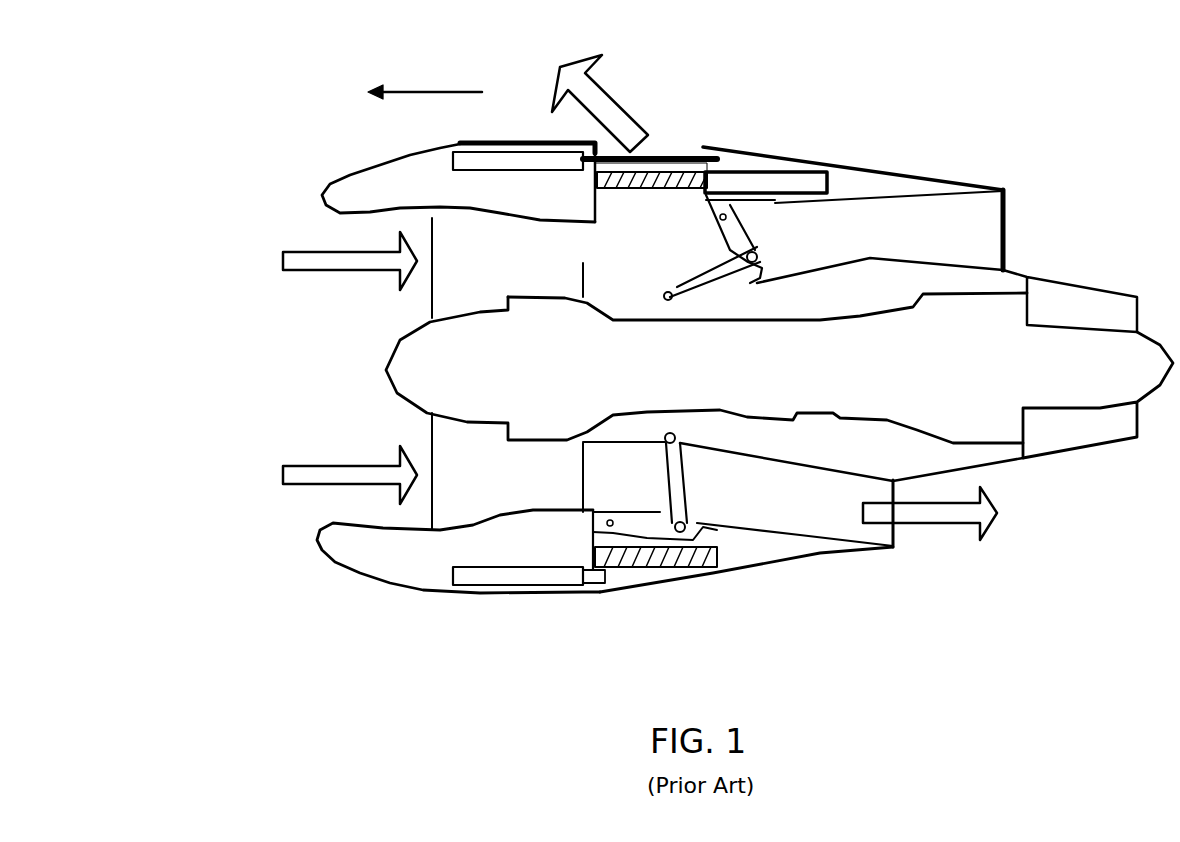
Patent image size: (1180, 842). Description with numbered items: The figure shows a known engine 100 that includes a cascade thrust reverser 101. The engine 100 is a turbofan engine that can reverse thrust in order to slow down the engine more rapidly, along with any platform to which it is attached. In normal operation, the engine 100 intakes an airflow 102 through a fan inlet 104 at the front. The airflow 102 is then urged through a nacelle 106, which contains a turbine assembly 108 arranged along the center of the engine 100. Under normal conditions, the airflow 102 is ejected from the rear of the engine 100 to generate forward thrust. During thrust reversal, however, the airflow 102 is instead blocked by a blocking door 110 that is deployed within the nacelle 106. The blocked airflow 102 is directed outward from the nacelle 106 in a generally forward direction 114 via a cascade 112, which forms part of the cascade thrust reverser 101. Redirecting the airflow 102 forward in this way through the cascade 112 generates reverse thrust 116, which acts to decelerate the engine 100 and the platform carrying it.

The engine 100 is at (340, 80).
The cascade thrust reverser 101 is at (687, 147).
The airflow 102 is at (513, 268).
The fan inlet 104 is at (320, 237).
The nacelle 106 is at (407, 148).
The turbine assembly 108 is at (378, 345).
The blocking door 110 is at (760, 247).
The cascade 112 is at (660, 190).
The forward direction 114 is at (427, 92).
The reverse thrust 116 is at (553, 62).